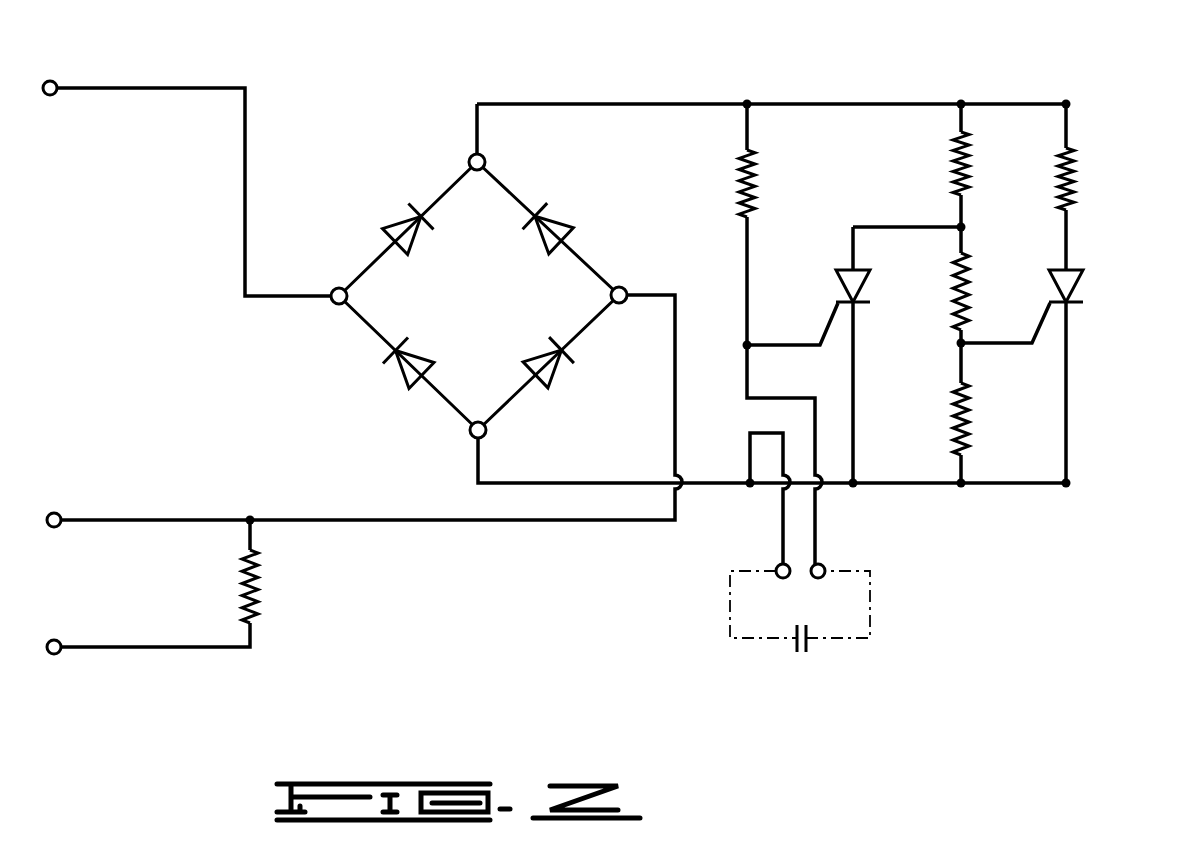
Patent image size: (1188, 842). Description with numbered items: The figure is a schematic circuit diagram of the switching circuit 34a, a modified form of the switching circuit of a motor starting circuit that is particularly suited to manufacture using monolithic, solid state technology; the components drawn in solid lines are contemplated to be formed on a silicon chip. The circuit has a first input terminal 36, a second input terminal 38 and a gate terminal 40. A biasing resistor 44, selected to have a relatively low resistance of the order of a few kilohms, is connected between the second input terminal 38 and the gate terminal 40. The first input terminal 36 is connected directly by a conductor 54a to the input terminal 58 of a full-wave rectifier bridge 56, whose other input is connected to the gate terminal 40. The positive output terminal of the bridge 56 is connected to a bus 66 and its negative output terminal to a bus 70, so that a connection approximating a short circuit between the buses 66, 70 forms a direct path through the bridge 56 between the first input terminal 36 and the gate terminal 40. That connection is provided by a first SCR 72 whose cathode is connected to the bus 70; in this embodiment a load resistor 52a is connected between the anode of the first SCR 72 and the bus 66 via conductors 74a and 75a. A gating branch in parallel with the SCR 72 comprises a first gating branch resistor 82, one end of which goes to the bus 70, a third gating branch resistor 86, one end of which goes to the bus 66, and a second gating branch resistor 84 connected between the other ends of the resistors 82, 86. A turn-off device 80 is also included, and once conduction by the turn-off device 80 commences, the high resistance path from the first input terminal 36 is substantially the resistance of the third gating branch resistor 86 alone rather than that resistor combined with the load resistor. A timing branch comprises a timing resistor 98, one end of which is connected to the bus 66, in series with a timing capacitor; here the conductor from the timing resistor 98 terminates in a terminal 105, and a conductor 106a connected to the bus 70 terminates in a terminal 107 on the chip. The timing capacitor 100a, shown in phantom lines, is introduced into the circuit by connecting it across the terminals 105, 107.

The first input terminal 36 is at (55, 81).
The second input terminal 38 is at (56, 655).
The gate terminal 40 is at (58, 513).
The biasing resistor 44 is at (262, 577).
The conductor 54a is at (247, 124).
The full-wave rectifier bridge 56 is at (425, 400).
The input terminal 58 is at (464, 291).
The switching circuit 34a is at (592, 78).
The bus 66 is at (878, 104).
The conductor 74a is at (1068, 116).
The timing resistor 98 is at (757, 190).
The third gating branch resistor 86 is at (970, 142).
The second gating branch resistor 84 is at (972, 275).
The first gating branch resistor 82 is at (972, 411).
The load resistor 52a is at (1074, 179).
The conductor 75a is at (1068, 238).
The turn-off device 80 is at (868, 284).
The first SCR 72 is at (1084, 290).
The bus 70 is at (930, 485).
The terminal 105 is at (826, 566).
The conductor 106a is at (780, 530).
The terminal 107 is at (780, 579).
The timing capacitor 100a is at (775, 688).